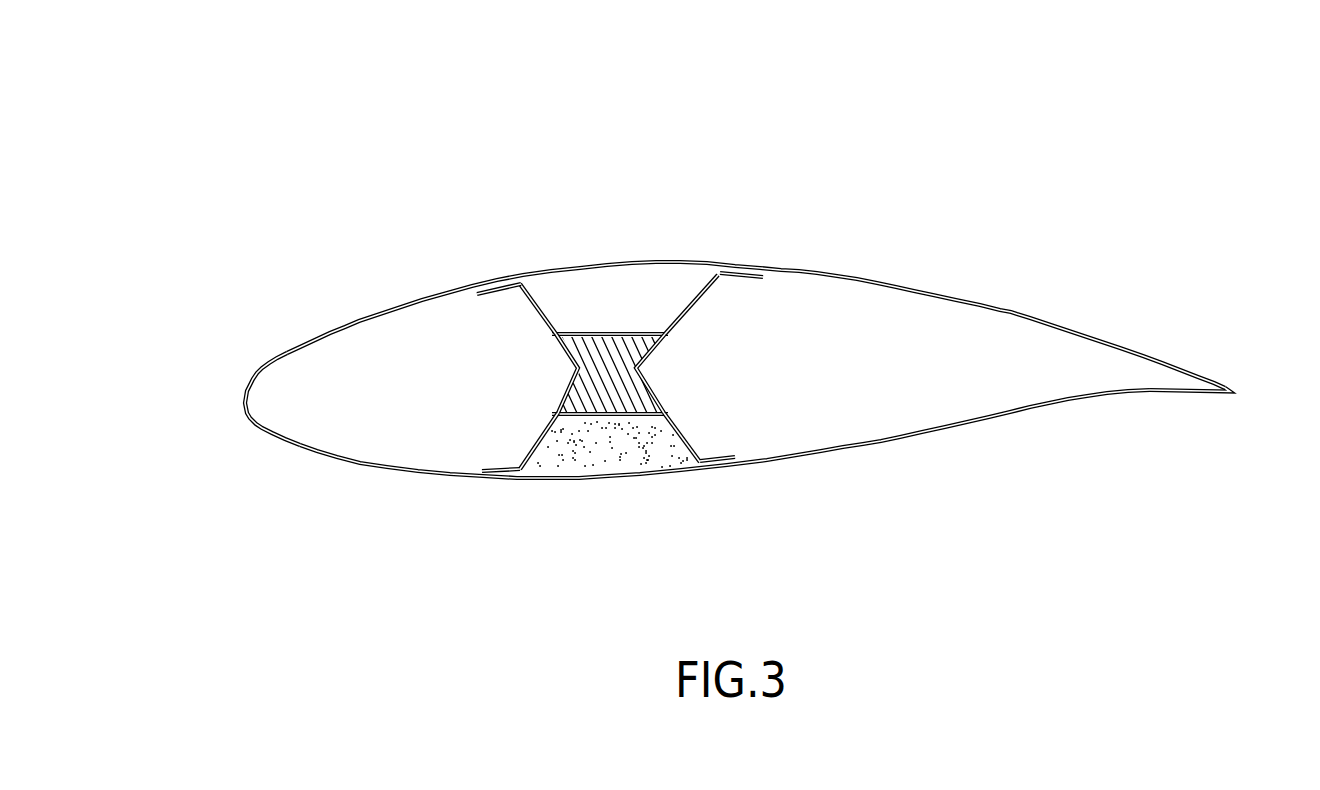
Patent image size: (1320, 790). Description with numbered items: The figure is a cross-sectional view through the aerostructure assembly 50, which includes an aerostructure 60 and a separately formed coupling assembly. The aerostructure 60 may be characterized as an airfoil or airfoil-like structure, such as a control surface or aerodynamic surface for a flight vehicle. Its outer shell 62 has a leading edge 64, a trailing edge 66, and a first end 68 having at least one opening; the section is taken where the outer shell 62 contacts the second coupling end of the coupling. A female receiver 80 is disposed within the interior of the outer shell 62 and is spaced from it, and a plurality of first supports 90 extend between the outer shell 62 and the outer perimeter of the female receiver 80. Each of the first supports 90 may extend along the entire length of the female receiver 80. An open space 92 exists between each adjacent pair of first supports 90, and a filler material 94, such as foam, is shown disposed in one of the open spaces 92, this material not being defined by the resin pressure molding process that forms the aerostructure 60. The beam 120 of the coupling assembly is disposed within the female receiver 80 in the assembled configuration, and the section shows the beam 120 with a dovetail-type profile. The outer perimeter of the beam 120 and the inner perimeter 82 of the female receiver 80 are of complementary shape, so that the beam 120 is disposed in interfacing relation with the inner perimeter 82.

The aerostructure assembly 50 is at (886, 124).
The aerostructure 60 is at (1030, 258).
The outer shell 62 is at (402, 305).
The leading edge 64 is at (244, 403).
The trailing edge 66 is at (1232, 391).
The first end 68 is at (432, 448).
The female receiver 80 is at (655, 389).
The inner perimeter 82 is at (568, 364).
The first supports 90 is at (530, 309).
The open space 92 is at (377, 397).
The filler material 94 is at (610, 465).
The beam 120 is at (618, 352).